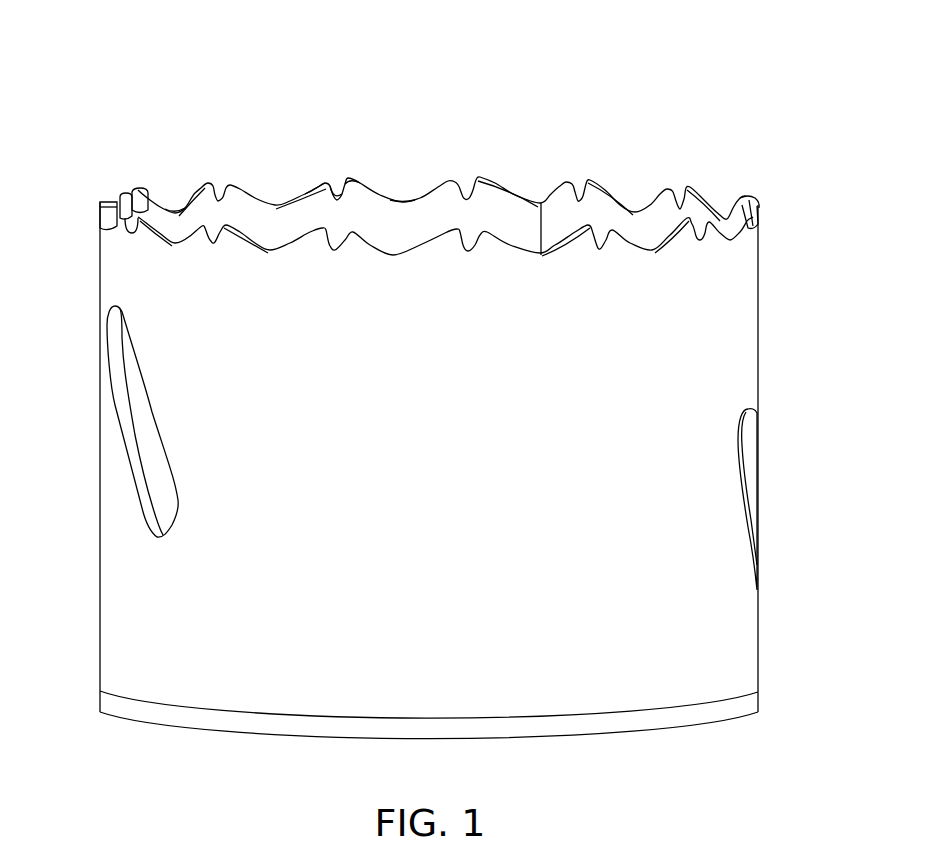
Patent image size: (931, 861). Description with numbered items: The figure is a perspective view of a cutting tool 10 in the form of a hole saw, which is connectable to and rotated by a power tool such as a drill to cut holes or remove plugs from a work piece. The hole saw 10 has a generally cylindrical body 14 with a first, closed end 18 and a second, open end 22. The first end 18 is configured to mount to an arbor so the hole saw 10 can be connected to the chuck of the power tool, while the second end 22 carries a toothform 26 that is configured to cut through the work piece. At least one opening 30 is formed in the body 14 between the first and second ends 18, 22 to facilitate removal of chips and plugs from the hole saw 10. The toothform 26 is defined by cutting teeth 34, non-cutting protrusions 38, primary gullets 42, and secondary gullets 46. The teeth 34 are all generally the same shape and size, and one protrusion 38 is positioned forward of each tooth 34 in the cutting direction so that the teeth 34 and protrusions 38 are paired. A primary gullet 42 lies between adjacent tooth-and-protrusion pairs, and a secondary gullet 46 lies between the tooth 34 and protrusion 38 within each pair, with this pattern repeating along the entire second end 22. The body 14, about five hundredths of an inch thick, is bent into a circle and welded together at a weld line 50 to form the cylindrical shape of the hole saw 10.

The cutting tool 10 is at (590, 76).
The body 14 is at (117, 567).
The first end 18 is at (757, 712).
The second end 22 is at (758, 205).
The toothform 26 is at (172, 183).
The opening 30 is at (117, 375).
The cutting teeth 34 is at (348, 180).
The non-cutting protrusions 38 is at (315, 182).
The primary gullets 42 is at (403, 198).
The secondary gullets 46 is at (338, 182).
The weld line 50 is at (535, 203).